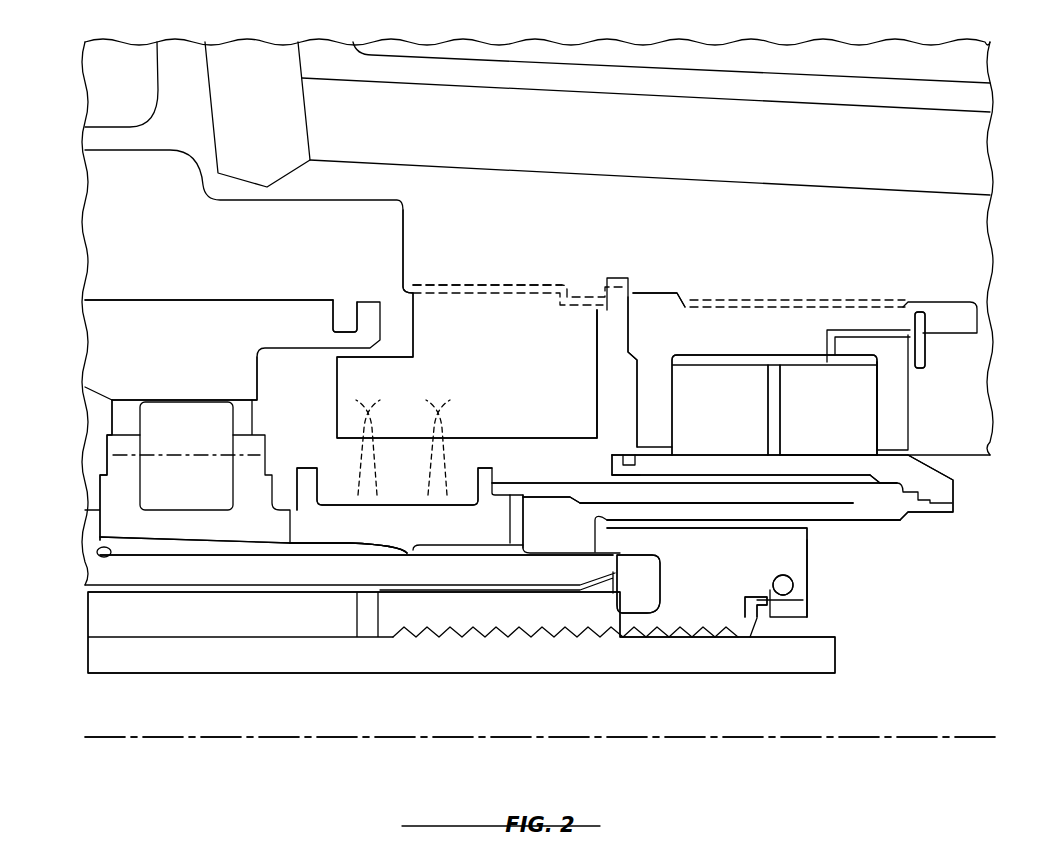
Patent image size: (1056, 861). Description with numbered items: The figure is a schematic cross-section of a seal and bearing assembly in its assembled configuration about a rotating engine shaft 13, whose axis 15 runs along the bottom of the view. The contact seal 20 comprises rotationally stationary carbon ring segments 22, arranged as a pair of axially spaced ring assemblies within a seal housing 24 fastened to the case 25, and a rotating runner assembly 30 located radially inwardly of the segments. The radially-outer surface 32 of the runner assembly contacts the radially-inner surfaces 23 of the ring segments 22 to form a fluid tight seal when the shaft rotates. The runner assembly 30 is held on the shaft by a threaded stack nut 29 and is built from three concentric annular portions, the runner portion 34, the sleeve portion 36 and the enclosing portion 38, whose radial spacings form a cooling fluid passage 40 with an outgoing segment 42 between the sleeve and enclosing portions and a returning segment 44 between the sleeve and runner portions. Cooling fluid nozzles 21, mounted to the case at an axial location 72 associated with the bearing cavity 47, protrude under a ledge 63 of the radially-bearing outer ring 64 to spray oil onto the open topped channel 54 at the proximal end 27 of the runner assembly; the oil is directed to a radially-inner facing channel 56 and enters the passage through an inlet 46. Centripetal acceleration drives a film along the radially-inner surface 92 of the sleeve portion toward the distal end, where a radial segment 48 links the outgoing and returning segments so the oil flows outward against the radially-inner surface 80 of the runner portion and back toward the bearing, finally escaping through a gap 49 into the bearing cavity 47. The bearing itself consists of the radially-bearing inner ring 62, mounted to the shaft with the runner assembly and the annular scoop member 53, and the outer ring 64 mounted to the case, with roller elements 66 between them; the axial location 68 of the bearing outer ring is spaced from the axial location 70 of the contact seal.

The shaft 13 is at (820, 658).
The central axis 15 is at (895, 735).
The contact seal 20 is at (840, 368).
The cooling fluid nozzles 21 is at (427, 423).
The ring segments 22 is at (807, 377).
The radially-inner surfaces 23 is at (733, 460).
The seal housing 24 is at (633, 307).
The case 25 is at (592, 230).
The proximal end 27 is at (560, 478).
The threaded stack nut 29 is at (692, 615).
The runner assembly 30 is at (890, 448).
The radially-outer surface 32 is at (683, 307).
The runner portion 34 is at (803, 460).
The sleeve portion 36 is at (832, 479).
The enclosing portion 38 is at (893, 510).
The fluid passage 40 is at (853, 514).
The outgoing segment 42 is at (687, 503).
The returning segment 44 is at (763, 487).
The inlet 46 is at (535, 510).
The bearing cavity 47 is at (598, 405).
The radial segment 48 is at (867, 488).
The gap 49 is at (607, 470).
The annular scoop member 53 is at (352, 523).
The open topped channel 54 is at (335, 497).
The radially-inner facing channel 56 is at (460, 553).
The radially-bearing inner ring 62 is at (180, 527).
The ledge 63 is at (325, 332).
The radially-bearing outer ring 64 is at (226, 384).
The roller elements 66 is at (201, 489).
The axial location 68 is at (258, 280).
The axial location 70 is at (648, 182).
The axial location 72 is at (335, 280).
The radially-inner surface 80 is at (800, 485).
The radially-inner surface 92 is at (645, 545).